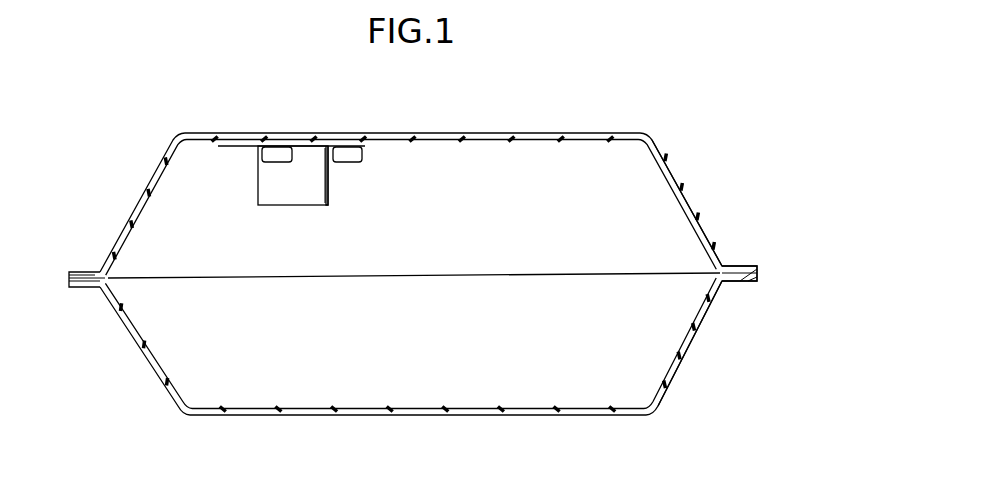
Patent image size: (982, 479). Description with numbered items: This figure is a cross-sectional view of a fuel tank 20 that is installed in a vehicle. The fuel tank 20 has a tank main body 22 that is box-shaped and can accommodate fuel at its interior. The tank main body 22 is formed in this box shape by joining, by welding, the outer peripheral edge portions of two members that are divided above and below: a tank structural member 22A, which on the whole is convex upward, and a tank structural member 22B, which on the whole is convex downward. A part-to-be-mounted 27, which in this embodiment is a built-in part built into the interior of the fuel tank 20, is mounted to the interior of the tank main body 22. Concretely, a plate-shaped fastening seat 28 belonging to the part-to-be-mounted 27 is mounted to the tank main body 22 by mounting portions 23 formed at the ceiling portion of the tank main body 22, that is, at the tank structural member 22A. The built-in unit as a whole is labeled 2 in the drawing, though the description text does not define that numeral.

The fuel tank 20 is at (677, 91).
The tank main body 22 is at (832, 160).
The tank structural member 22A is at (697, 207).
The tank structural member 22B is at (717, 297).
The electronic component unit 2 is at (289, 217).
The part-to-be-mounted 27 is at (322, 208).
The fastening seat 28 is at (366, 146).
The mounting portions 23 is at (273, 166).